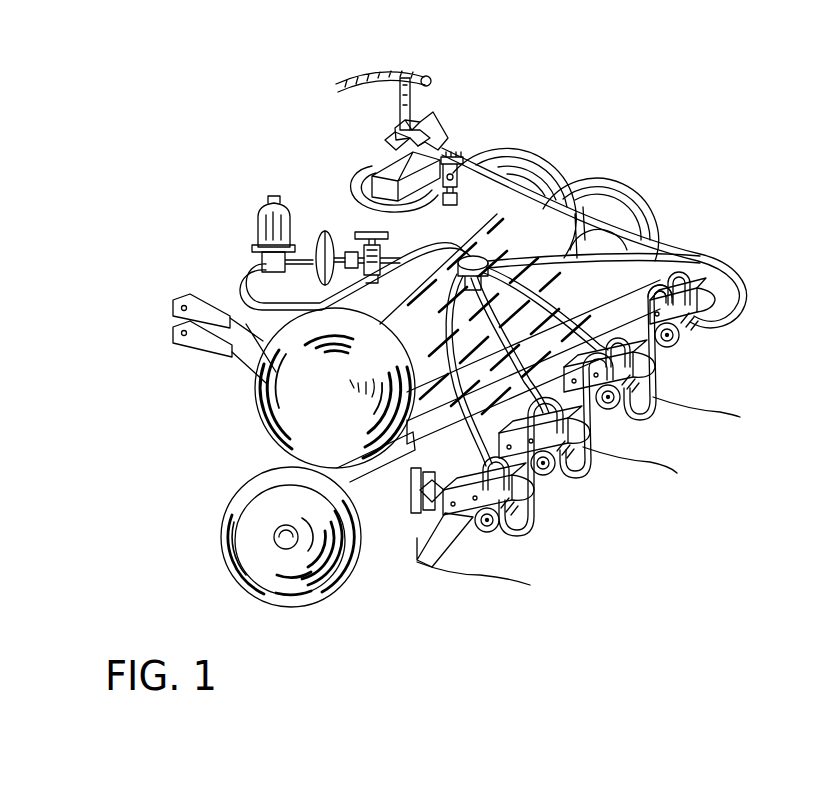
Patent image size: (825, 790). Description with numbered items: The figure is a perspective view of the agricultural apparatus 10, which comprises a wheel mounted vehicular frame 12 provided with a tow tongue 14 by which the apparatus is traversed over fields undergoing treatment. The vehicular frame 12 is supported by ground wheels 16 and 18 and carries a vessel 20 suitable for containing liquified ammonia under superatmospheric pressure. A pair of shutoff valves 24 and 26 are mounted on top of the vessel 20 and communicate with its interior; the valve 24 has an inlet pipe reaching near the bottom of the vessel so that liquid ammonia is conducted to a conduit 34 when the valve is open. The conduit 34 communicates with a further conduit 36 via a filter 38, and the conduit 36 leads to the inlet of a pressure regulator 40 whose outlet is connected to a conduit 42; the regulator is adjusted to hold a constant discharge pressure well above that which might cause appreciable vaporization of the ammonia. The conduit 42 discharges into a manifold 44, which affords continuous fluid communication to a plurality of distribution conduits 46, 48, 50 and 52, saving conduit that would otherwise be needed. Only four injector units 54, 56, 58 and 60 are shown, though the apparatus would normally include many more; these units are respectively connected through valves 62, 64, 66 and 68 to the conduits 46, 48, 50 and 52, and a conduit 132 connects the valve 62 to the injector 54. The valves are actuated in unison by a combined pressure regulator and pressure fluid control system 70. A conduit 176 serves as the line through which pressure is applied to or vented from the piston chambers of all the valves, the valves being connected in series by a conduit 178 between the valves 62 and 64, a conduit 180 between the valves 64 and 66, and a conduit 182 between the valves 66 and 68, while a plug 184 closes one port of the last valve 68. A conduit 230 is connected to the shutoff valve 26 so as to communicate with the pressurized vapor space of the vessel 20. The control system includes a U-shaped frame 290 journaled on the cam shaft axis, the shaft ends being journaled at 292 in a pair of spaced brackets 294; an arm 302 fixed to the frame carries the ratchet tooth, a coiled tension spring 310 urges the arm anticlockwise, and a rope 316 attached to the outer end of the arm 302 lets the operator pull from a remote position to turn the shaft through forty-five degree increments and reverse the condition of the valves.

The agricultural apparatus 10 is at (579, 136).
The vehicular frame 12 is at (368, 473).
The tow tongue 14 is at (193, 337).
The ground wheel 16 is at (248, 523).
The ground wheel 18 is at (618, 220).
The vessel 20 is at (307, 395).
The shutoff valve 24 is at (380, 256).
The shutoff valve 26 is at (460, 194).
The conduit 34 is at (347, 264).
The conduit 36 is at (294, 257).
The filter 38 is at (332, 238).
The pressure regulator 40 is at (267, 223).
The conduit 42 is at (238, 274).
The manifold 44 is at (480, 256).
The conduit 46 is at (522, 262).
The conduit 48 is at (533, 280).
The conduit 50 is at (507, 347).
The conduit 52 is at (452, 314).
The injector unit 54 is at (657, 282).
The injector unit 56 is at (596, 428).
The injector unit 58 is at (535, 485).
The injector unit 60 is at (443, 537).
The valve 62 is at (683, 333).
The valve 64 is at (630, 412).
The valve 66 is at (577, 472).
The valve 68 is at (492, 527).
The combined pressure regulator and pressure fluid control system 70 is at (345, 139).
The conduit 132 is at (677, 283).
The conduit 176 is at (740, 280).
The conduit 178 is at (650, 360).
The conduit 180 is at (590, 448).
The conduit 182 is at (540, 508).
The plug 184 is at (520, 528).
The conduit 230 is at (363, 192).
The U-shaped frame 290 is at (394, 130).
The journals 292 is at (383, 138).
The brackets 294 is at (372, 154).
The arm 302 is at (418, 82).
The coiled tension spring 310 is at (423, 120).
The rope 316 is at (380, 72).